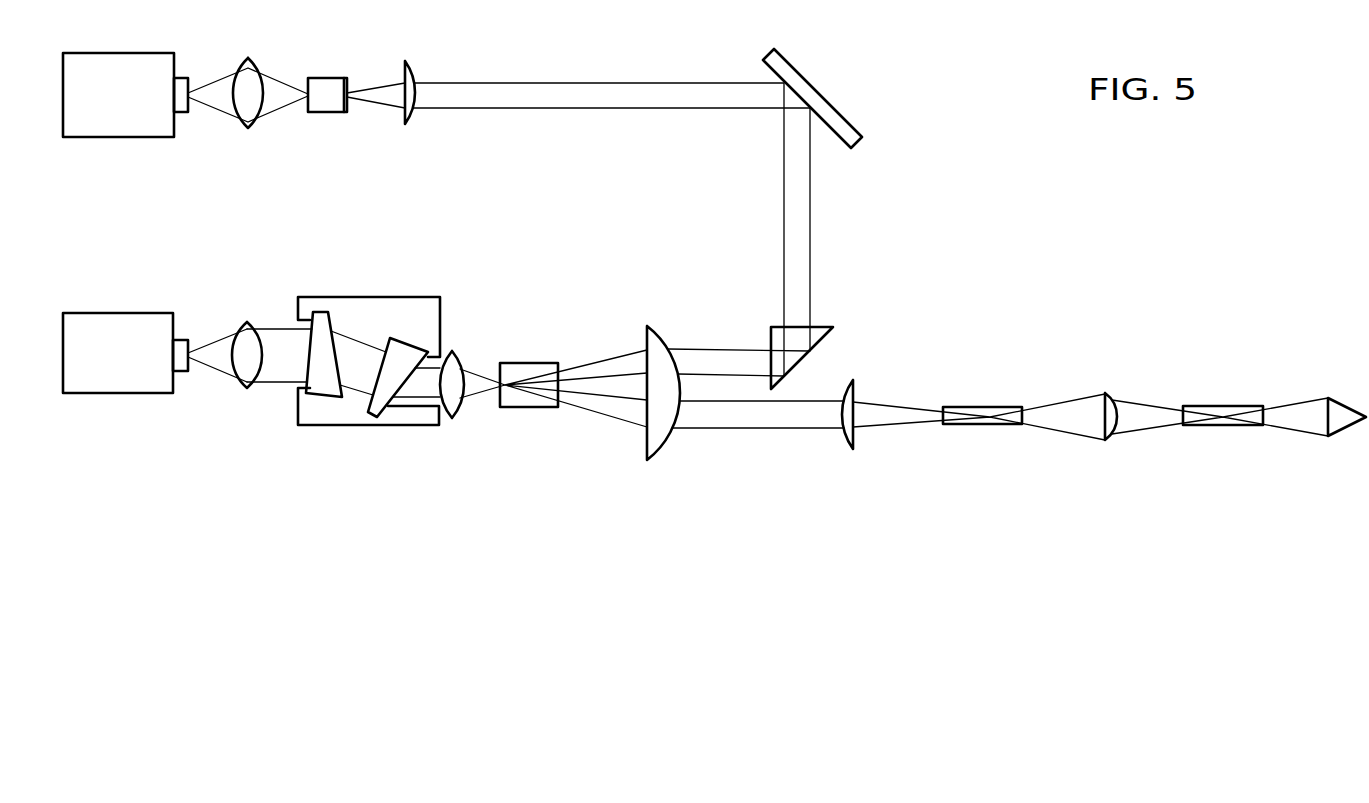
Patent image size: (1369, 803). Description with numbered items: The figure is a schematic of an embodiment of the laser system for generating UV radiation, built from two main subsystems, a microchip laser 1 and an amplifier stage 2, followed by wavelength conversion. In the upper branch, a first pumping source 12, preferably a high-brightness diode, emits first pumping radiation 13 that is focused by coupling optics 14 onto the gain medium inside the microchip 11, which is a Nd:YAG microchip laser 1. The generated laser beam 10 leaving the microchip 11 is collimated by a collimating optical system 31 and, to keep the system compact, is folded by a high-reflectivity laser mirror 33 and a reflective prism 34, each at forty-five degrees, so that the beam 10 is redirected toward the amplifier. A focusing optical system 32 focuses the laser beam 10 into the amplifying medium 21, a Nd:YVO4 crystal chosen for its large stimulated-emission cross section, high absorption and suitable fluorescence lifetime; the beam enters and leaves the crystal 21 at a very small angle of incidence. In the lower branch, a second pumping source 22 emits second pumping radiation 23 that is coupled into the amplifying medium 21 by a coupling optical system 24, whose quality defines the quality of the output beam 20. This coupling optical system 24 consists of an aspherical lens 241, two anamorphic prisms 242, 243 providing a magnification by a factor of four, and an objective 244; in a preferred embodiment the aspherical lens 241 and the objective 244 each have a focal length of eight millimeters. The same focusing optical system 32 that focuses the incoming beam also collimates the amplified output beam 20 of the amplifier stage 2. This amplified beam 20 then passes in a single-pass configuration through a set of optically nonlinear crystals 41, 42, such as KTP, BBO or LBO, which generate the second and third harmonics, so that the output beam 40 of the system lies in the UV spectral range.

The microchip laser 1 is at (440, 178).
The amplifier stage 2 is at (590, 295).
The laser beam 10 is at (637, 97).
The microchip 11 is at (324, 100).
The first pumping source 12 is at (114, 122).
The first pumping radiation 13 is at (220, 98).
The coupling optics 14 is at (252, 128).
The output beam 20 is at (795, 418).
The amplifying medium 21 is at (517, 397).
The second pumping source 22 is at (107, 380).
The second pumping radiation 23 is at (218, 358).
The coupling optical system 24 is at (272, 292).
The collimating optical system 31 is at (402, 120).
The focusing optical system 32 is at (662, 432).
The high-reflectivity laser mirror 33 is at (830, 112).
The reflective prism 34 is at (815, 337).
The output beam of the system 40 is at (1307, 418).
The optically nonlinear crystal 41 is at (990, 425).
The optically nonlinear crystal 42 is at (1229, 420).
The aspherical lens 241 is at (250, 388).
The anamorphic prism 242 is at (322, 383).
The anamorphic prism 243 is at (377, 413).
The objective 244 is at (452, 406).